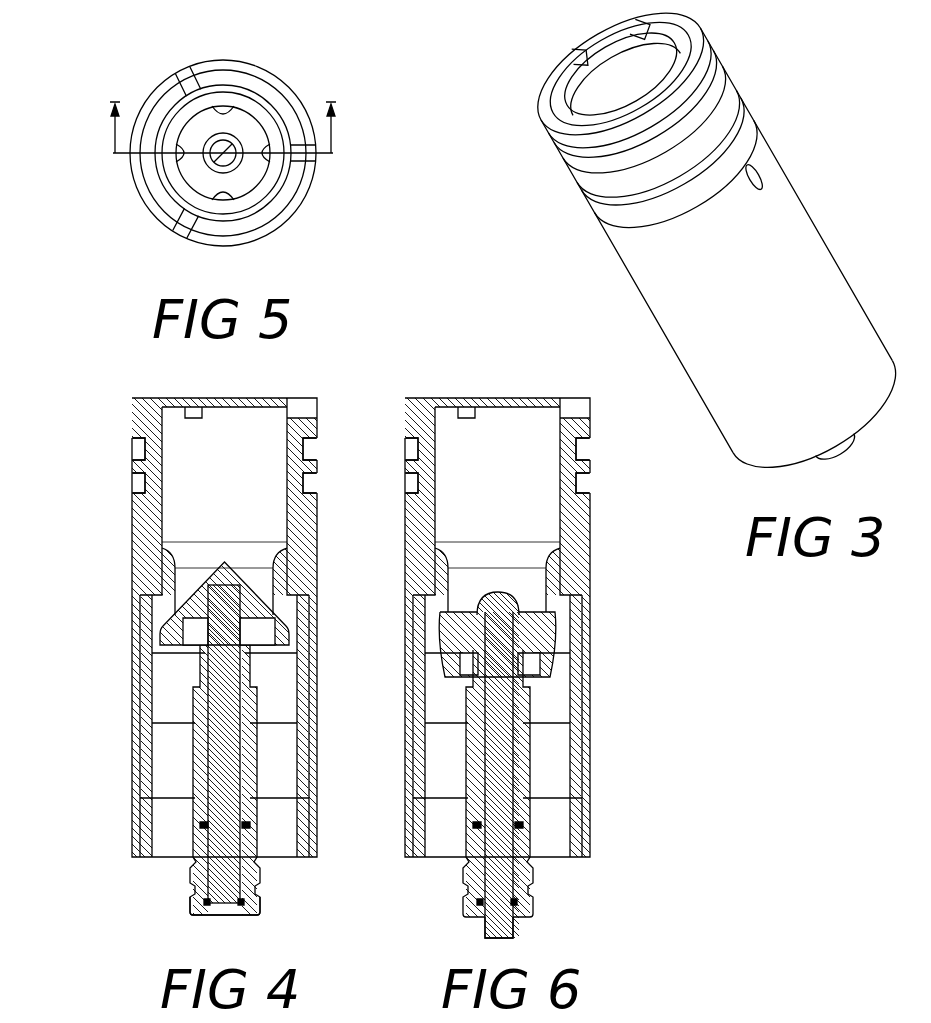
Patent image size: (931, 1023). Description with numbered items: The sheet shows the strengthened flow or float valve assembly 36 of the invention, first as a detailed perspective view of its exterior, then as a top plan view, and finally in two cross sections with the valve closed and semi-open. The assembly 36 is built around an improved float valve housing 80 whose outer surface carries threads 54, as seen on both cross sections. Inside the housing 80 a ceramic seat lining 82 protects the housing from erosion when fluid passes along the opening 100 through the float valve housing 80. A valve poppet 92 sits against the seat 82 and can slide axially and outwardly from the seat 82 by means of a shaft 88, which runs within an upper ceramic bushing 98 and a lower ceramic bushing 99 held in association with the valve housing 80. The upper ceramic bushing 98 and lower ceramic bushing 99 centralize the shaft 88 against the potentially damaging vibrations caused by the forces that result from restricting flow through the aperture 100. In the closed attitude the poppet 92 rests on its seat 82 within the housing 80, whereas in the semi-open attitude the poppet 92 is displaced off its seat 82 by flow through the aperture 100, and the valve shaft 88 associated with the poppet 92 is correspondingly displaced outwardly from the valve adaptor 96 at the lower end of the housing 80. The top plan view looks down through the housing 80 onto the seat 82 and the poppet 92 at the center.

In FIG. 3, the flow valve assembly 36 is at (719, 250).
In FIG. 4, the threads 54 is at (137, 485).
In FIG. 6, the threads 54 is at (497, 465).
In FIG. 5, the float valve housing 80 is at (163, 210).
In FIG. 3, the float valve housing 80 is at (785, 258).
In FIG. 4, the float valve housing 80 is at (140, 575).
In FIG. 6, the float valve housing 80 is at (497, 627).
In FIG. 5, the ceramic seat lining 82 is at (175, 120).
In FIG. 4, the ceramic seat lining 82 is at (224, 673).
In FIG. 6, the ceramic seat lining 82 is at (535, 673).
In FIG. 6, the shaft 88 is at (538, 904).
In FIG. 5, the valve poppet 92 is at (243, 127).
In FIG. 4, the valve poppet 92 is at (224, 745).
In FIG. 6, the valve poppet 92 is at (451, 626).
In FIG. 4, the valve adaptor 96 is at (168, 828).
In FIG. 6, the valve adaptor 96 is at (497, 827).
In FIG. 4, the upper ceramic bushing 98 is at (205, 670).
In FIG. 6, the upper ceramic bushing 98 is at (498, 783).
In FIG. 4, the lower ceramic bushing 99 is at (247, 896).
In FIG. 6, the opening 100 is at (431, 732).